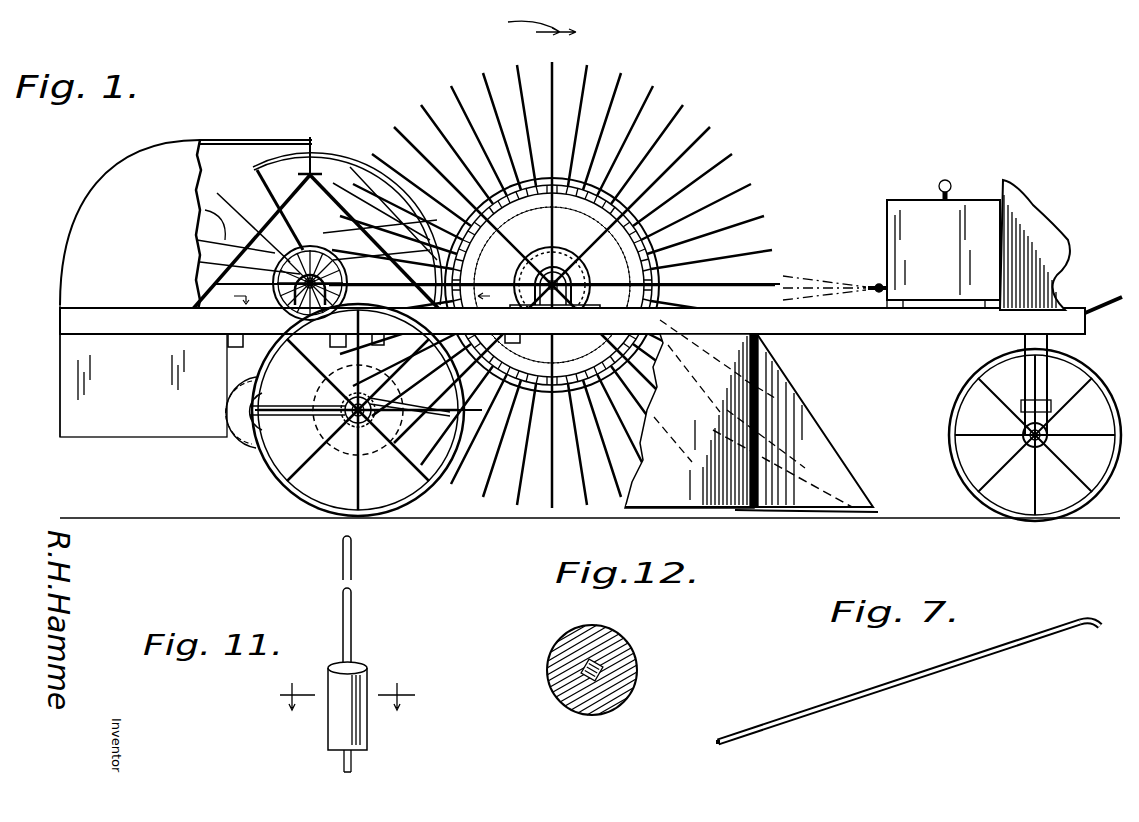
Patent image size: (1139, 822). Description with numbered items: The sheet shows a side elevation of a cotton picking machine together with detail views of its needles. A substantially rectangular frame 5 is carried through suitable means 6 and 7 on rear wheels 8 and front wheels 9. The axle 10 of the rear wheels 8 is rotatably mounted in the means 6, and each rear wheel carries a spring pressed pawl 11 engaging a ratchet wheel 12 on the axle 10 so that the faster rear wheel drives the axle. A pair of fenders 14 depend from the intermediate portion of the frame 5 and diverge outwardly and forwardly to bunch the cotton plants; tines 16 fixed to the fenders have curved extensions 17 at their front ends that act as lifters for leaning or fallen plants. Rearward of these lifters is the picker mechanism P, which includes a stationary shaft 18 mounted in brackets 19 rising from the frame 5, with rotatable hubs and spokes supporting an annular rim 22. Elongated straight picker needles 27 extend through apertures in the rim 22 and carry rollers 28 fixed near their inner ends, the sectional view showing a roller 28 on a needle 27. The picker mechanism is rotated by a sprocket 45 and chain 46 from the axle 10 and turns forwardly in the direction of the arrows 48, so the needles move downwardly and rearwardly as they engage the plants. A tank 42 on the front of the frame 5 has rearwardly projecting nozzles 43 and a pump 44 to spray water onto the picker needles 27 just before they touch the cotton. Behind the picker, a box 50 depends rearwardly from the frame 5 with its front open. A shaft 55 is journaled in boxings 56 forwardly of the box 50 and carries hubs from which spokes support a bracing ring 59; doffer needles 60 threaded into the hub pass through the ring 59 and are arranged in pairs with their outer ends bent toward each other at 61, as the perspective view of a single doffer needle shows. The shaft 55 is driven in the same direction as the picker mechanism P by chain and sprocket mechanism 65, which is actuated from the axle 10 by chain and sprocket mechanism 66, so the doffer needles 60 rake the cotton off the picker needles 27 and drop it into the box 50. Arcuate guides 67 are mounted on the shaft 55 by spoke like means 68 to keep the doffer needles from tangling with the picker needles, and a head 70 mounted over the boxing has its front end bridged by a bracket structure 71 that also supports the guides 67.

In FIG. 1, the head 70 is at (132, 165).
In FIG. 1, the bracket structure 71 is at (277, 138).
In FIG. 1, the arcuate guides 67 is at (325, 160).
In FIG. 1, the spoke like means 68 is at (342, 170).
In FIG. 1, the bracing ring 59 is at (232, 166).
In FIG. 1, the doffer needles 60 is at (198, 210).
In FIG. 7, the doffer needles 60 is at (864, 700).
In FIG. 1, the shaft 55 is at (200, 262).
In FIG. 1, the boxings 56 is at (285, 308).
In FIG. 1, the axle 10 is at (330, 462).
In FIG. 1, the chain and sprocket mechanism 65 is at (238, 372).
In FIG. 1, the chain and sprocket mechanism 66 is at (262, 470).
In FIG. 1, the box 50 is at (123, 432).
In FIG. 1, the means 6 is at (365, 355).
In FIG. 1, the spring pressed pawl 11 is at (368, 391).
In FIG. 1, the ratchet wheels 12 is at (370, 440).
In FIG. 11, the ratchet wheels 12 is at (346, 696).
In FIG. 1, the rear wheels 8 is at (422, 505).
In FIG. 1, the sprocket 45 is at (538, 250).
In FIG. 1, the chain 46 is at (573, 252).
In FIG. 1, the stationary shaft 18 is at (590, 272).
In FIG. 1, the brackets 19 is at (545, 304).
In FIG. 1, the picker mechanism P is at (656, 90).
In FIG. 1, the picker needles 27 is at (733, 148).
In FIG. 11, the picker needles 27 is at (352, 578).
In FIG. 12, the picker needles 27 is at (598, 662).
In FIG. 1, the annular rim 22 is at (760, 178).
In FIG. 1, the arrows 48 is at (527, 25).
In FIG. 1, the pump 44 is at (945, 178).
In FIG. 1, the tank 42 is at (915, 218).
In FIG. 1, the nozzles 43 is at (870, 282).
In FIG. 1, the frame 5 is at (1060, 322).
In FIG. 1, the means 7 is at (1050, 380).
In FIG. 1, the front wheels 9 is at (1008, 518).
In FIG. 1, the fenders 14 is at (792, 412).
In FIG. 1, the curved extensions 17 is at (845, 475).
In FIG. 1, the tines 16 is at (822, 516).
In FIG. 11, the rollers 28 is at (335, 718).
In FIG. 12, the rollers 28 is at (575, 705).
In FIG. 7, the bent outer ends 61 is at (1094, 616).